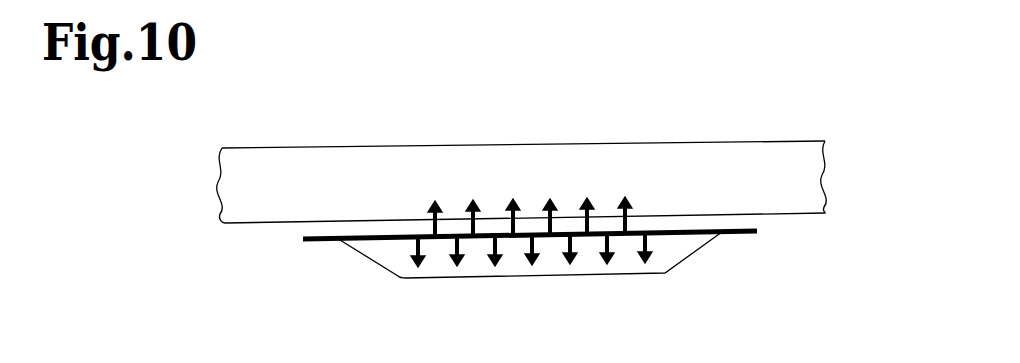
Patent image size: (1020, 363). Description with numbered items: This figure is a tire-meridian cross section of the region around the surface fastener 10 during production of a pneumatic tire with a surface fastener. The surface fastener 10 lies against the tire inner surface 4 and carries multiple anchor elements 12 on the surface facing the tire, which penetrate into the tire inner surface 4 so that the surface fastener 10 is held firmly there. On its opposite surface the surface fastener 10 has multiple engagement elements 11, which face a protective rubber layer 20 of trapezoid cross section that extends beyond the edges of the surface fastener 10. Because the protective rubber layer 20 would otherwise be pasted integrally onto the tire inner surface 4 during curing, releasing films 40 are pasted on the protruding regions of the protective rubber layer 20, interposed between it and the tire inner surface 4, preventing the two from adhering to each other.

The tire inner surface 4 is at (812, 167).
The surface fastener 10 is at (640, 232).
The engagement element 11 is at (533, 241).
The anchor element 12 is at (468, 215).
The protective rubber layer 20 is at (668, 255).
The releasing film 40 is at (315, 241).